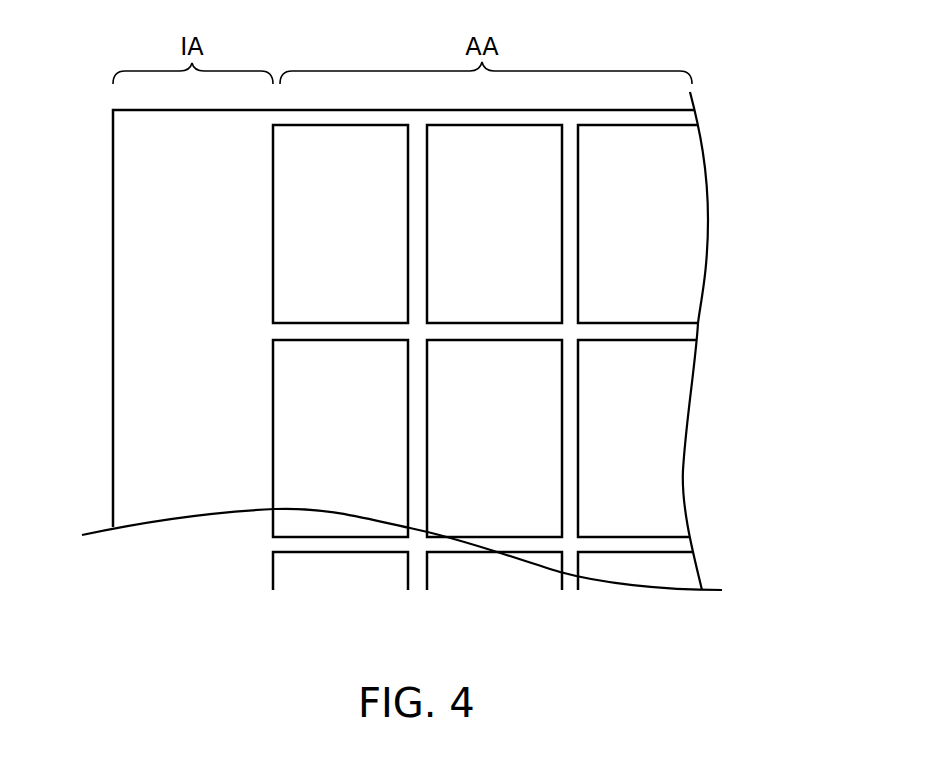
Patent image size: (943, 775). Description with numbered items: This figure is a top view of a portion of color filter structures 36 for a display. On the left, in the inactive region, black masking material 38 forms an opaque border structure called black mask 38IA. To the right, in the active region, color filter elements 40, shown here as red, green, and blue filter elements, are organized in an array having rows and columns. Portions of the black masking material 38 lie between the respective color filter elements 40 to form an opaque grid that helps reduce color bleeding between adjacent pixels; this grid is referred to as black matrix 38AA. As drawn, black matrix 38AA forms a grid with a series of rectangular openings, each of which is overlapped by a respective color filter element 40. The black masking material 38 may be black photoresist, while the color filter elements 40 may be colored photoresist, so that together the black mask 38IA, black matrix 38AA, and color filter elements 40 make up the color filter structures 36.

The color filter structures 36 is at (425, 420).
The black masking material 38 is at (112, 447).
The black mask 38IA is at (205, 488).
The black matrix 38AA is at (530, 437).
The color filter elements 40 is at (443, 500).